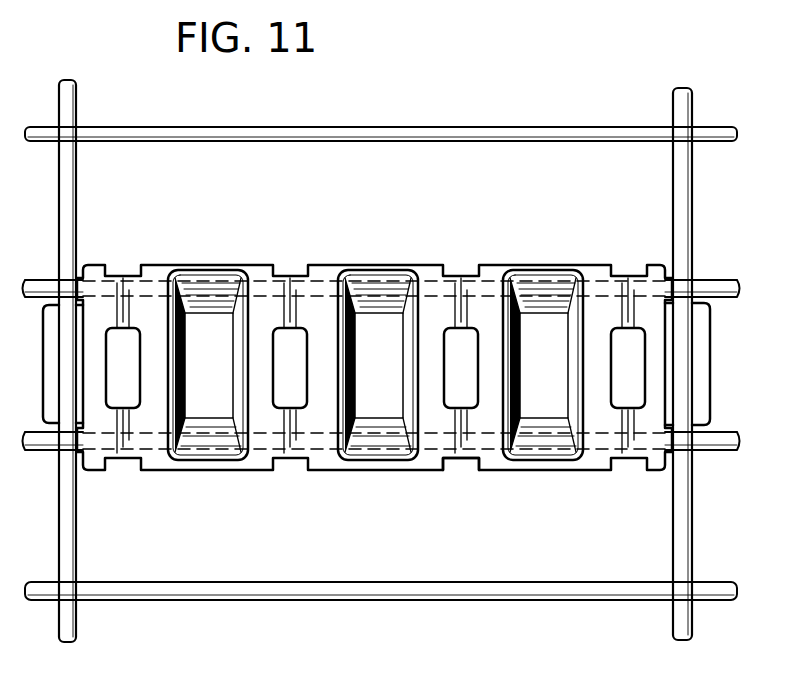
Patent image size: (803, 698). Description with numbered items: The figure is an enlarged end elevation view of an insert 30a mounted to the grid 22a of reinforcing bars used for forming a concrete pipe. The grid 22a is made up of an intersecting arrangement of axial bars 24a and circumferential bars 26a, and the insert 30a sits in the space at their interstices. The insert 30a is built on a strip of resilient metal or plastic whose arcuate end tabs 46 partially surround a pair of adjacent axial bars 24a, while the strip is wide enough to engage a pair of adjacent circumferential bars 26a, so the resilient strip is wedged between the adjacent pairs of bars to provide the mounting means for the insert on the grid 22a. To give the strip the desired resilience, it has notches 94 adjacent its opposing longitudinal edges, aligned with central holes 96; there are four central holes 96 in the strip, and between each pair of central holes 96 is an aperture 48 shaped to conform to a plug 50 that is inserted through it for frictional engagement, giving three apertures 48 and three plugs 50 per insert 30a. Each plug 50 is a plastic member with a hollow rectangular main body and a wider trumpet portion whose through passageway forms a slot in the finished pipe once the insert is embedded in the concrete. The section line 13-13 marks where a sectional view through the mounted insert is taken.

The section line 13- 13 is at (584, 58).
The grid 22a is at (704, 73).
The axial bars 24a is at (77, 552).
The circumferential bars 26a is at (707, 279).
The end tabs 46 is at (43, 357).
The insert 30a is at (332, 260).
The aperture 48 is at (544, 340).
The plug 50 is at (333, 398).
The notches 94 is at (457, 462).
The central holes 96 is at (466, 362).